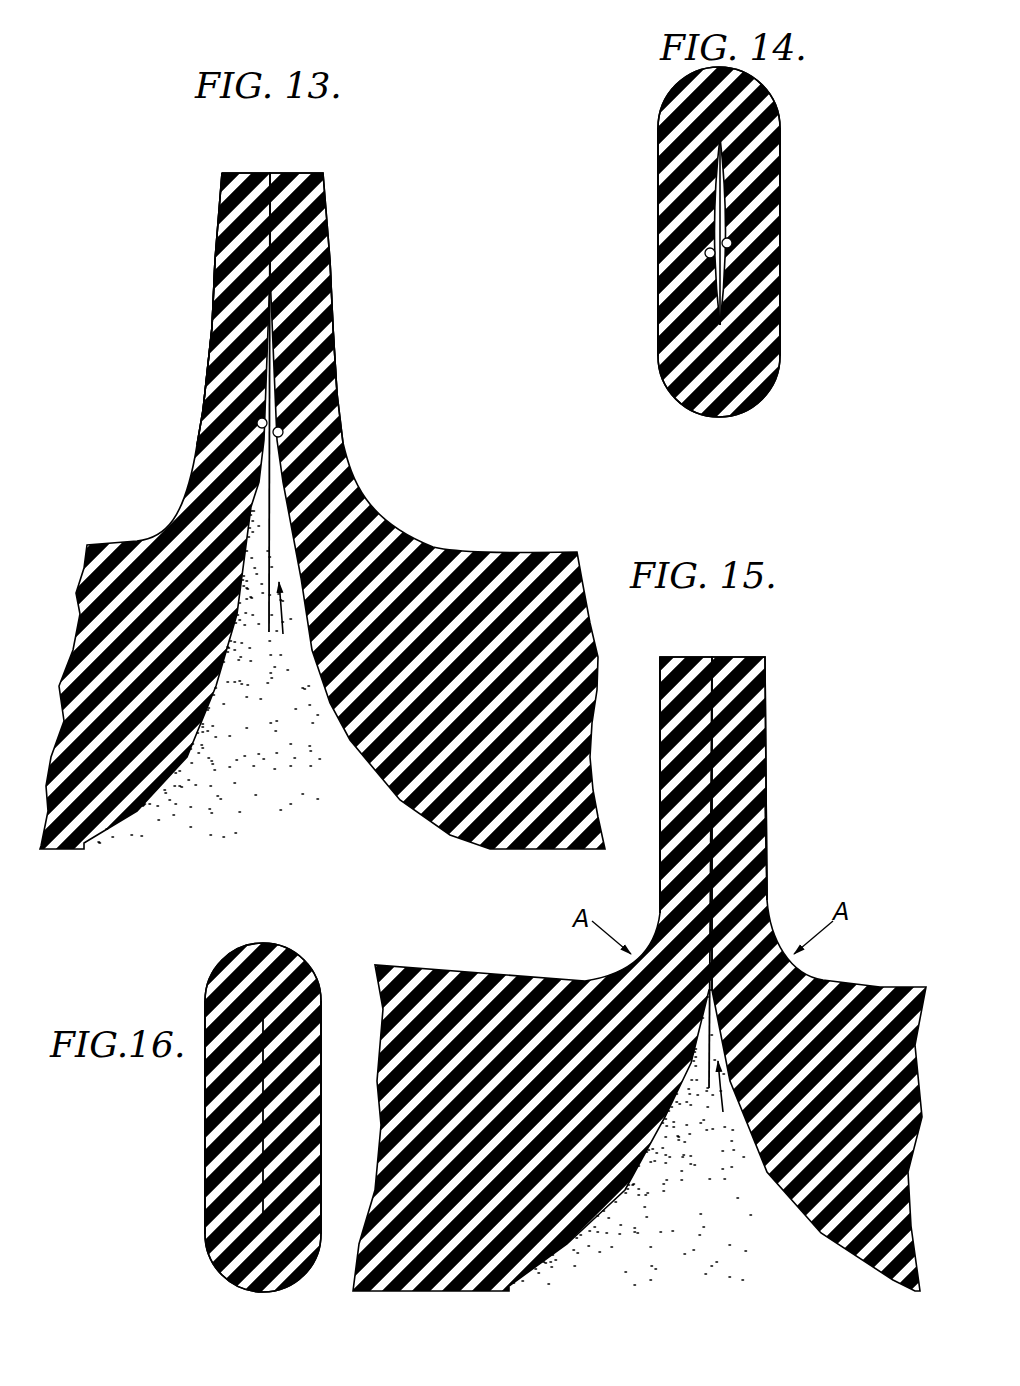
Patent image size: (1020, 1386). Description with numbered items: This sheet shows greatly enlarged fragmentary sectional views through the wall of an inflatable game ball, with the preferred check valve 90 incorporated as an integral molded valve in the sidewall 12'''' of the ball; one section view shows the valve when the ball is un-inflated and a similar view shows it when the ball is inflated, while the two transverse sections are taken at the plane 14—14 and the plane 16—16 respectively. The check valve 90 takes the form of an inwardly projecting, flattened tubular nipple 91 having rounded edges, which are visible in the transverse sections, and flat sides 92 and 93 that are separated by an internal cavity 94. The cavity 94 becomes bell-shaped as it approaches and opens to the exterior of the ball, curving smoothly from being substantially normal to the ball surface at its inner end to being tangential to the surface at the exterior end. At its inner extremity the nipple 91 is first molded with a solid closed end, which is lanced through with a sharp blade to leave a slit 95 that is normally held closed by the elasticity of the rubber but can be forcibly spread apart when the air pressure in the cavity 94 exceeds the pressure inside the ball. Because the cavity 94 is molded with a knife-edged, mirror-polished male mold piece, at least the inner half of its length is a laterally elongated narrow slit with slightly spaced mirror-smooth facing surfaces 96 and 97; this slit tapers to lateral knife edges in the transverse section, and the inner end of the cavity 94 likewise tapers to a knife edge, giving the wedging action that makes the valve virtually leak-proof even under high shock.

In FIG. 13, the sidewall 12'''' is at (510, 693).
In FIG. 15, the sidewall 12'''' is at (510, 693).
In FIG. 13, the check valve 90 is at (352, 273).
In FIG. 14, the check valve 90 is at (640, 287).
In FIG. 15, the check valve 90 is at (796, 718).
In FIG. 16, the check valve 90 is at (176, 1185).
In FIG. 13, the flattened tubular nipple 91 is at (214, 271).
In FIG. 14, the flattened tubular nipple 91 is at (784, 178).
In FIG. 15, the flattened tubular nipple 91 is at (658, 886).
In FIG. 16, the flattened tubular nipple 91 is at (208, 1106).
In FIG. 13, the flat side 92 is at (235, 326).
In FIG. 14, the flat side 92 is at (687, 234).
In FIG. 15, the flat side 92 is at (687, 856).
In FIG. 16, the flat side 92 is at (233, 1147).
In FIG. 13, the flat side 93 is at (306, 327).
In FIG. 14, the flat side 93 is at (758, 238).
In FIG. 15, the flat side 93 is at (740, 866).
In FIG. 16, the flat side 93 is at (290, 1123).
In FIG. 13, the internal cavity 94 is at (289, 624).
In FIG. 14, the internal cavity 94 is at (712, 284).
In FIG. 15, the internal cavity 94 is at (723, 1101).
In FIG. 16, the internal cavity 94 is at (270, 1080).
In FIG. 13, the slit 95 is at (267, 228).
In FIG. 14, the slit 95 is at (722, 209).
In FIG. 15, the slit 95 is at (718, 693).
In FIG. 13, the mirror-smooth facing surface 96 is at (243, 435).
In FIG. 14, the mirror-smooth facing surface 96 is at (705, 254).
In FIG. 13, the mirror-smooth facing surface 97 is at (300, 446).
In FIG. 14, the mirror-smooth facing surface 97 is at (735, 249).
In FIG. 13, the section plane 14— 14 is at (207, 360).
In FIG. 15, the section plane 16— 16 is at (693, 822).